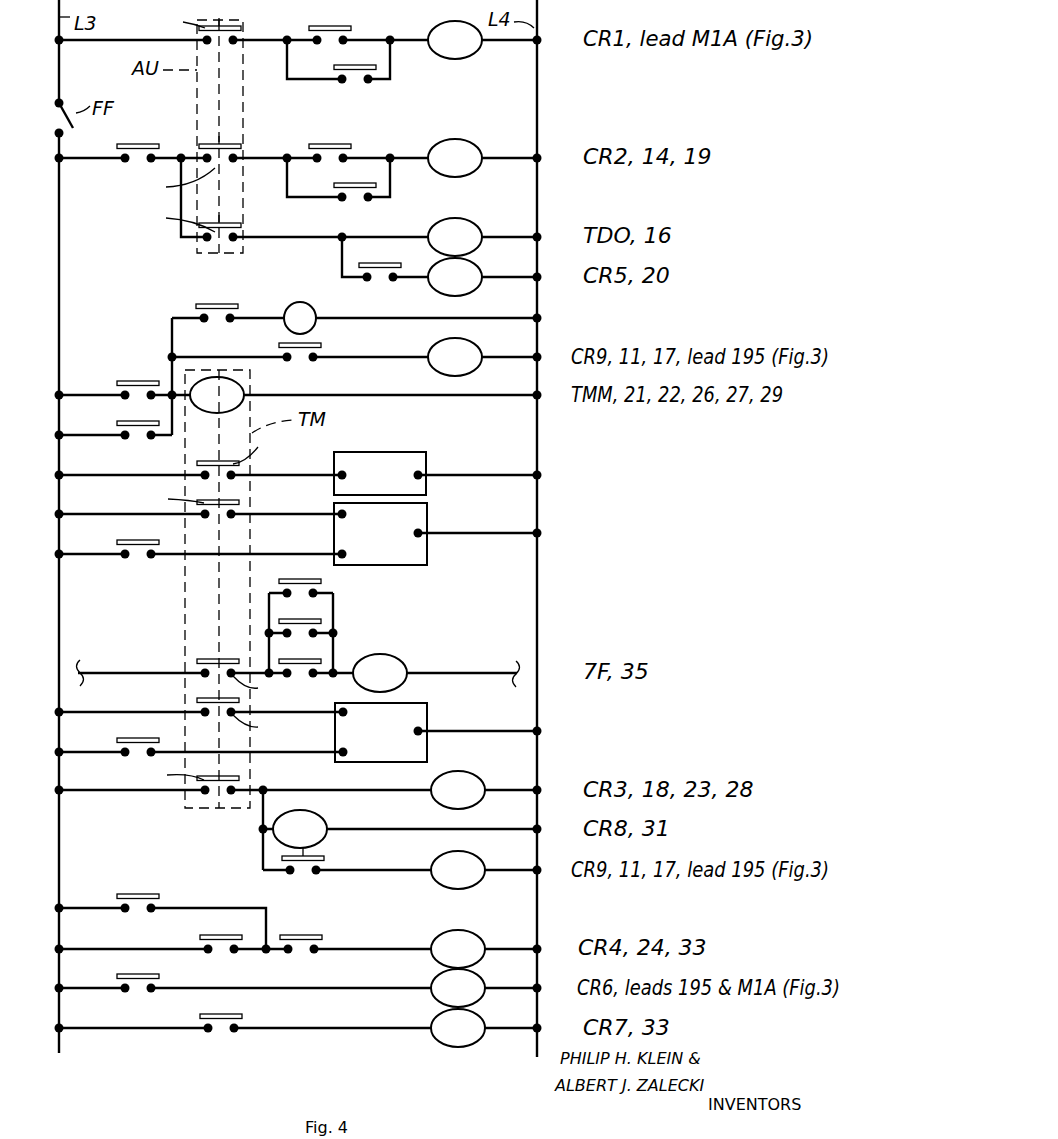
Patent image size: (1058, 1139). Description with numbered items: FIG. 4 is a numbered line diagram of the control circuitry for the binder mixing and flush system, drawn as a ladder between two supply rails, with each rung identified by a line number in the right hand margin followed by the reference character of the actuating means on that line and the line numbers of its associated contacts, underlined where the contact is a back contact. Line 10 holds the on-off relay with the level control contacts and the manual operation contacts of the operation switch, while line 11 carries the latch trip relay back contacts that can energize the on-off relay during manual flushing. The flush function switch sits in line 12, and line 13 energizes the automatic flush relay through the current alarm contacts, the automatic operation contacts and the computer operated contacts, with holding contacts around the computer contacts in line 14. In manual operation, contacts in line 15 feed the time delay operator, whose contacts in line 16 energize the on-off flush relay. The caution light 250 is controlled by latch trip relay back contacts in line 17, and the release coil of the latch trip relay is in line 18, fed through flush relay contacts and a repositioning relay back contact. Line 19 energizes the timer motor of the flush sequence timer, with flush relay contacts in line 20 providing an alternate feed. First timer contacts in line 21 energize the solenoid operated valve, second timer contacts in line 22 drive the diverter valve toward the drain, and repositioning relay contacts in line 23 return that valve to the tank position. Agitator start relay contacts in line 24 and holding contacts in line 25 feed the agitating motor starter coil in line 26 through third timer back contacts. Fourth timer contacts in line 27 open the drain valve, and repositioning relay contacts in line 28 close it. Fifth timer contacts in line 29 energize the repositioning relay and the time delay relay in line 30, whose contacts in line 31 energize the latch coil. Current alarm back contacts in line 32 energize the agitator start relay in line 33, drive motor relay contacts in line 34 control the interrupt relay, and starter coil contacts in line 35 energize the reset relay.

The line 10 is at (571, 43).
The line 11 is at (571, 82).
The line 12 is at (571, 121).
The line 13 is at (571, 161).
The line 14 is at (571, 200).
The line 15 is at (571, 240).
The line 16 is at (571, 280).
The line 17 is at (373, 359).
The line 18 is at (571, 360).
The line 19 is at (571, 398).
The line 20 is at (571, 438).
The line 21 is at (571, 478).
The line 22 is at (571, 517).
The line 23 is at (571, 557).
The line 24 is at (571, 596).
The line 25 is at (571, 636).
The line 26 is at (571, 676).
The line 27 is at (571, 715).
The line 28 is at (571, 755).
The line 29 is at (571, 793).
The line 30 is at (571, 832).
The line 31 is at (571, 873).
The line 32 is at (571, 911).
The line 33 is at (571, 952).
The line 34 is at (571, 991).
The line 35 is at (571, 1031).
The caution light 250 is at (299, 302).